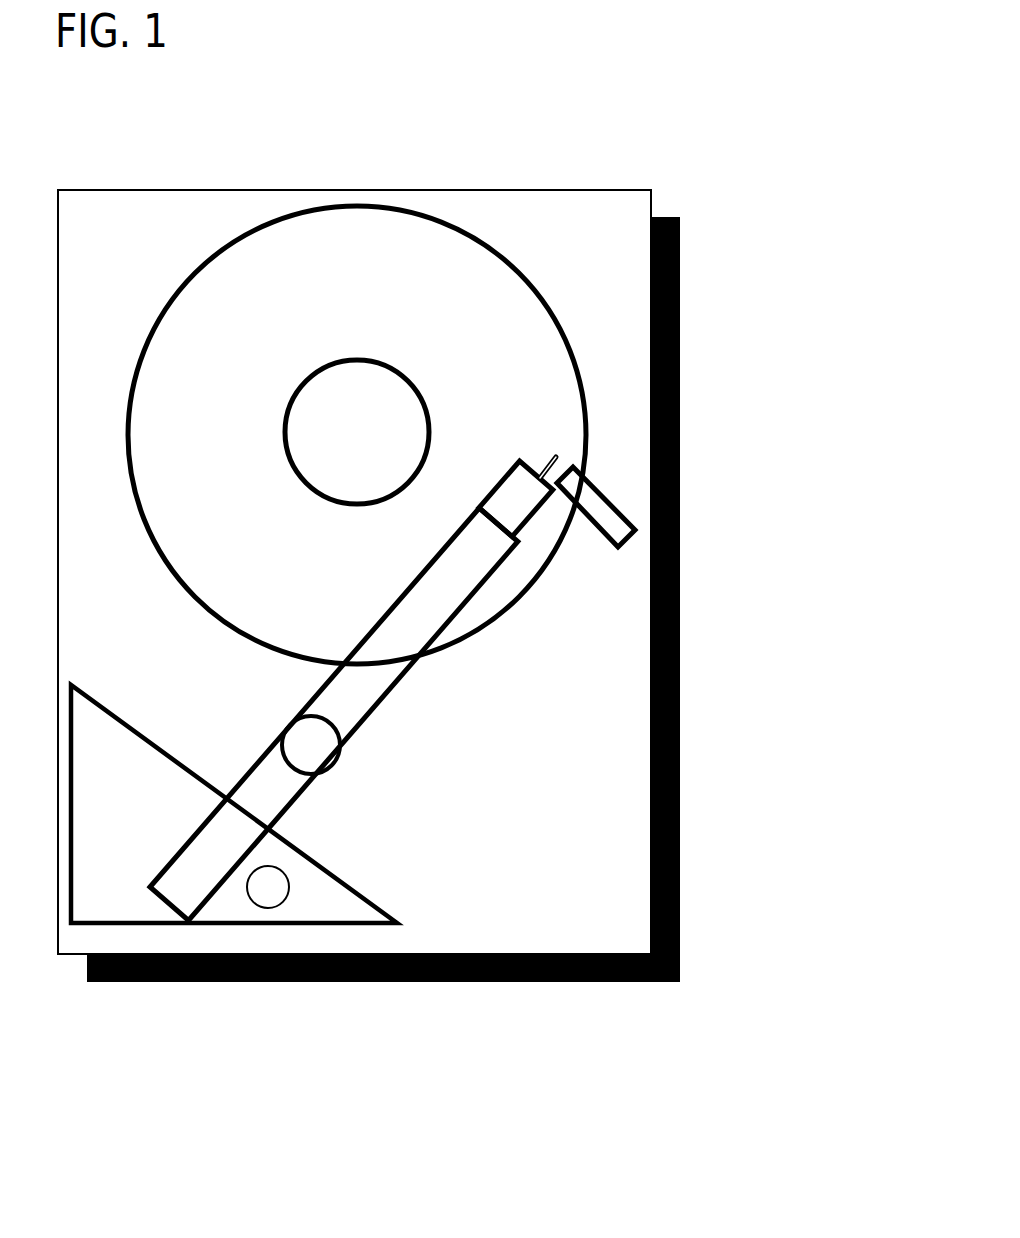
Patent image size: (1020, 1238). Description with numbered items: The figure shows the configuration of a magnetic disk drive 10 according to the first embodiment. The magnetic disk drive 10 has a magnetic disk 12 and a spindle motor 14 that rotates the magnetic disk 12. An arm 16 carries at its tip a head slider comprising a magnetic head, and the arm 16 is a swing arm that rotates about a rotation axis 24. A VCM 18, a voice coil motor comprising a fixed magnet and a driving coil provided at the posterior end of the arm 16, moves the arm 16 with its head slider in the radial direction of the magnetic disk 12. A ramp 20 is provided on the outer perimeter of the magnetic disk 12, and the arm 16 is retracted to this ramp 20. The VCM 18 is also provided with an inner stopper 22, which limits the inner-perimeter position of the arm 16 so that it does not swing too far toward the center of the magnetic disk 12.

The magnetic disk drive 10 is at (600, 190).
The magnetic disk 12 is at (303, 253).
The spindle motor 14 is at (385, 400).
The arm 16 is at (362, 680).
The VCM (Voice Coil Motor) 18 is at (118, 902).
The ramp 20 is at (595, 503).
The inner stopper 22 is at (258, 907).
The rotation axis 24 is at (322, 740).